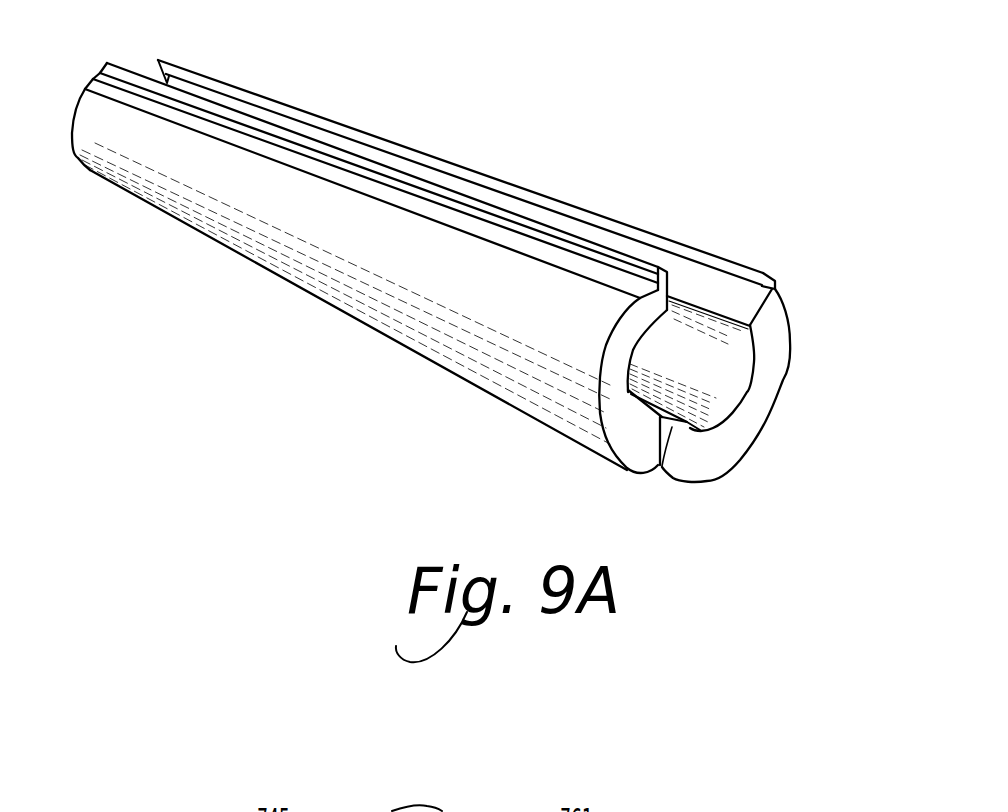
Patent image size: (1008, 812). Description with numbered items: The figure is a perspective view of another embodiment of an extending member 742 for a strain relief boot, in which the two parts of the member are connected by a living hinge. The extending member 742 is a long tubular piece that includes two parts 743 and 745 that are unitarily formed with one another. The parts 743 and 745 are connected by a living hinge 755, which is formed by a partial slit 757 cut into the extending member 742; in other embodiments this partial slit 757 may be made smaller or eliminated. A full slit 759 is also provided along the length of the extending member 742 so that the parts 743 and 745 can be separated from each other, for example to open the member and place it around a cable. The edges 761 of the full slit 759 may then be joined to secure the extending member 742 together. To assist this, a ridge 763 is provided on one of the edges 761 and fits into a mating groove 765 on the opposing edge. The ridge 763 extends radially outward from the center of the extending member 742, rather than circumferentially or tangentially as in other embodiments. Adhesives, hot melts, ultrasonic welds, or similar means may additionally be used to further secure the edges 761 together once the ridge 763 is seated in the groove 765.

The extending member 742 is at (352, 115).
The part 743 is at (770, 378).
The part 745 is at (605, 376).
The living hinge 755 is at (656, 467).
The partial slit 757 is at (670, 427).
The full slit 759 is at (675, 294).
The edges 761 is at (722, 277).
The ridge 763 is at (645, 268).
The mating groove 765 is at (782, 286).